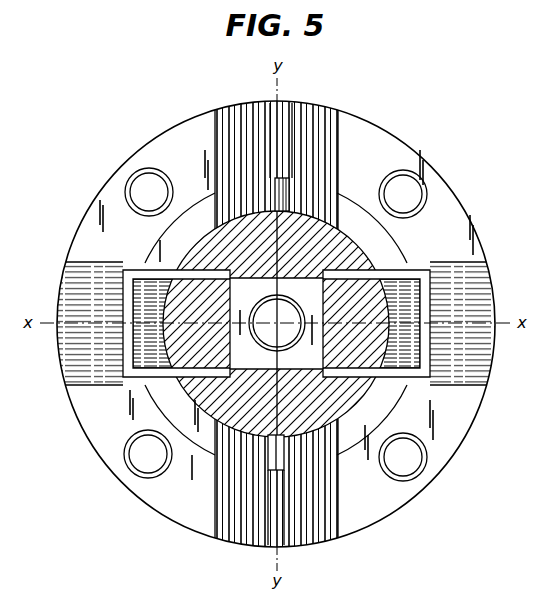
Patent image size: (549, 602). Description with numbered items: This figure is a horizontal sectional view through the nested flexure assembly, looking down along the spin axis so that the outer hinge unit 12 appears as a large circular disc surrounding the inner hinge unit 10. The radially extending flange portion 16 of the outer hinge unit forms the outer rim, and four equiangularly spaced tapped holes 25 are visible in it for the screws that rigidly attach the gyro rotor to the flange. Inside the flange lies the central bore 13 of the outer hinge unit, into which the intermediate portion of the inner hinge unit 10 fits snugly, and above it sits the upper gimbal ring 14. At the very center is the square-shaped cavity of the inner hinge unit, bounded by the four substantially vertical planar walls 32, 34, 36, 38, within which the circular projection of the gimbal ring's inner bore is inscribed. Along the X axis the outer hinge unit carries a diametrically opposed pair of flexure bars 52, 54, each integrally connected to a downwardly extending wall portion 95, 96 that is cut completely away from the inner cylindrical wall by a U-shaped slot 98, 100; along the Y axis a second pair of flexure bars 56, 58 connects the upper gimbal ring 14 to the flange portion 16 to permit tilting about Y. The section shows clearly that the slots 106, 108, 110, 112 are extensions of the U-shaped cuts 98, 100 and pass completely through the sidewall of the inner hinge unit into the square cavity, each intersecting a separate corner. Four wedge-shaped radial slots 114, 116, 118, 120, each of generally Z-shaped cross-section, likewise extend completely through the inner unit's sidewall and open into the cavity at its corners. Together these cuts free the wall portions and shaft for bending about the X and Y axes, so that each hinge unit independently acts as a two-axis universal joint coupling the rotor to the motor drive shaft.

The inner hinge unit 10 is at (258, 436).
The outer hinge unit 12 is at (95, 438).
The central bore 13 is at (364, 395).
The upper gimbal ring 14 is at (158, 415).
The flange portion 16 is at (70, 402).
The tapped holes 25 is at (170, 190).
The planar wall 32 is at (232, 342).
The planar wall 34 is at (262, 280).
The planar wall 36 is at (312, 310).
The planar wall 38 is at (316, 370).
The flexure bar 52 is at (158, 346).
The flexure bar 54 is at (394, 346).
The flexure bar 56 is at (285, 452).
The flexure bar 58 is at (284, 190).
The downwardly extending wall portion 95 is at (158, 301).
The downwardly extending wall portion 96 is at (394, 301).
The U-shaped slot 98 is at (118, 352).
The U-shaped slot 100 is at (437, 303).
The slot 106 is at (163, 272).
The slot 108 is at (165, 382).
The slot 110 is at (437, 372).
The slot 112 is at (395, 263).
The wedge-shaped radial slot 114 is at (221, 398).
The wedge-shaped radial slot 116 is at (324, 407).
The wedge-shaped radial slot 118 is at (356, 260).
The wedge-shaped radial slot 120 is at (222, 265).